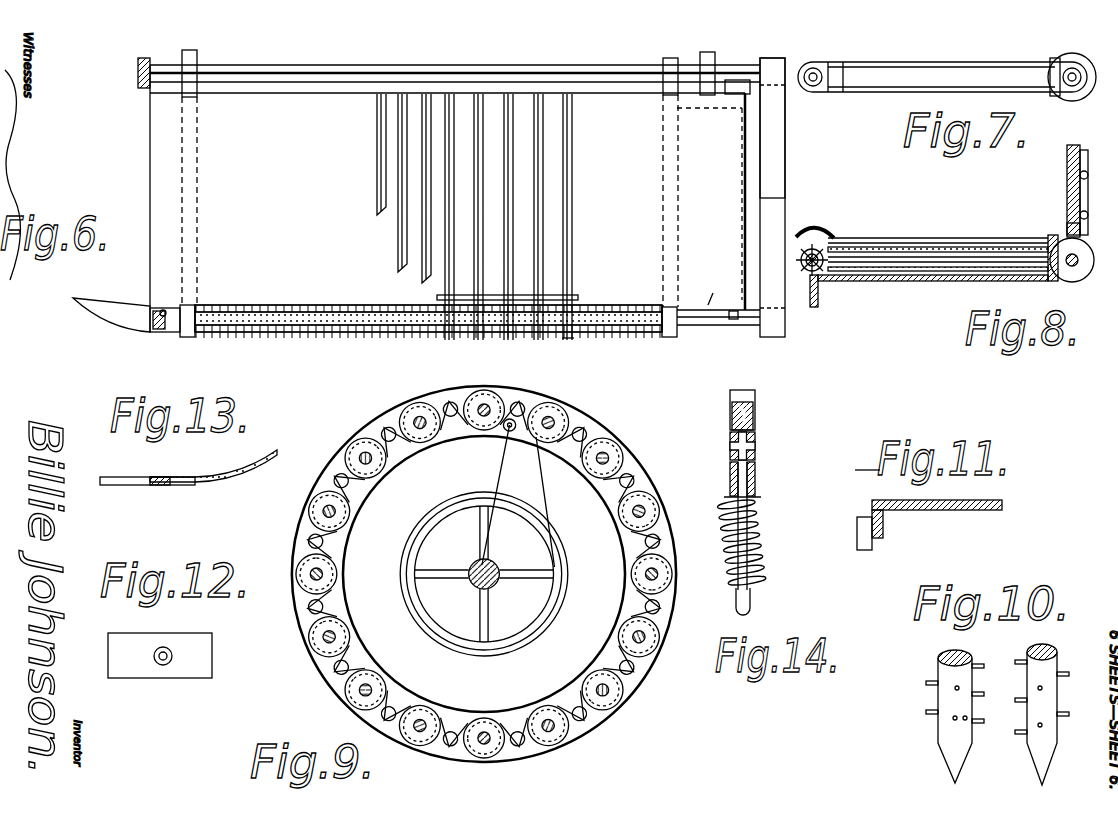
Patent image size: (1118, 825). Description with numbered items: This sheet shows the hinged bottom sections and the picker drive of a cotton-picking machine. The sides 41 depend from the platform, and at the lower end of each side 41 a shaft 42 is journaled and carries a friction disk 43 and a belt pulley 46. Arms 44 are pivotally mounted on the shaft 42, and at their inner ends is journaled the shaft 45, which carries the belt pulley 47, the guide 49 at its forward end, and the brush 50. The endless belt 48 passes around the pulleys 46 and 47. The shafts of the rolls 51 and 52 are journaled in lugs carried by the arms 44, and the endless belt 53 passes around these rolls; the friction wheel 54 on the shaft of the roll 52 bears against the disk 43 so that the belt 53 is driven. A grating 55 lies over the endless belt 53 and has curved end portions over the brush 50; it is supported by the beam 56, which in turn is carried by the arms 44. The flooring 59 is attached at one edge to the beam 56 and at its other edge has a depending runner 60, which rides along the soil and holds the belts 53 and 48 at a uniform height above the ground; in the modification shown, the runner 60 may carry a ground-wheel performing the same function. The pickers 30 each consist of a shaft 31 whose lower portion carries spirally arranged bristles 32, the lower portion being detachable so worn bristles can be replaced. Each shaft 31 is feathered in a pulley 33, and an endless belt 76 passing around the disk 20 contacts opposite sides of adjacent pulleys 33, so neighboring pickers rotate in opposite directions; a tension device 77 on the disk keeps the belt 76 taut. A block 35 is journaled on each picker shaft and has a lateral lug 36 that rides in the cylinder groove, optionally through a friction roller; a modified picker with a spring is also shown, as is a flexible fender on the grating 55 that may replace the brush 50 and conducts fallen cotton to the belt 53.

In FIG. 9, the disk 20 is at (507, 574).
In FIG. 14, the picker 30 is at (760, 525).
In FIG. 10, the picker 30 is at (1012, 655).
In FIG. 9, the shaft 31 is at (483, 574).
In FIG. 14, the shaft 31 is at (757, 400).
In FIG. 10, the shaft 31 is at (1075, 648).
In FIG. 14, the bristles 32 is at (760, 500).
In FIG. 10, the bristles 32 is at (935, 712).
In FIG. 9, the pulley 33 is at (334, 616).
In FIG. 12, the block 35 is at (200, 655).
In FIG. 12, the lug 36 is at (158, 652).
In FIG. 8, the side 41 is at (1068, 178).
In FIG. 6, the shaft 42 is at (282, 63).
In FIG. 7, the shaft 42 is at (1075, 100).
In FIG. 8, the shaft 42 is at (1072, 282).
In FIG. 6, the friction disk 43 is at (715, 60).
In FIG. 8, the friction disk 43 is at (1040, 152).
In FIG. 6, the arm 44 is at (160, 358).
In FIG. 8, the arm 44 is at (937, 268).
In FIG. 6, the shaft 45 is at (712, 327).
In FIG. 7, the shaft 45 is at (850, 66).
In FIG. 8, the shaft 45 is at (843, 237).
In FIG. 7, the belt pulley 46 is at (1067, 48).
In FIG. 6, the belt pulley 47 is at (810, 216).
In FIG. 7, the belt pulley 47 is at (820, 92).
In FIG. 6, the endless belt 48 is at (830, 355).
In FIG. 7, the endless belt 48 is at (923, 62).
In FIG. 6, the guide 49 is at (105, 323).
In FIG. 6, the brush 50 is at (310, 335).
In FIG. 8, the brush 50 is at (828, 240).
In FIG. 6, the roll 51 is at (150, 305).
In FIG. 6, the roll 52 is at (733, 319).
In FIG. 6, the endless belt 53 is at (260, 285).
In FIG. 7, the endless belt 53 is at (967, 72).
In FIG. 8, the endless belt 53 is at (942, 250).
In FIG. 6, the friction wheel 54 is at (750, 88).
In FIG. 7, the friction wheel 54 is at (1048, 77).
In FIG. 6, the grating 55 is at (573, 258).
In FIG. 8, the grating 55 is at (903, 237).
In FIG. 13, the grating 55 is at (118, 470).
In FIG. 6, the beam 56 is at (340, 87).
In FIG. 8, the beam 56 is at (1060, 272).
In FIG. 8, the flooring 59 is at (940, 279).
In FIG. 11, the flooring 59 is at (962, 510).
In FIG. 8, the runner 60 is at (820, 290).
In FIG. 11, the runner 60 is at (884, 527).
In FIG. 9, the endless belt 76 is at (484, 574).
In FIG. 9, the tension device 77 is at (496, 493).